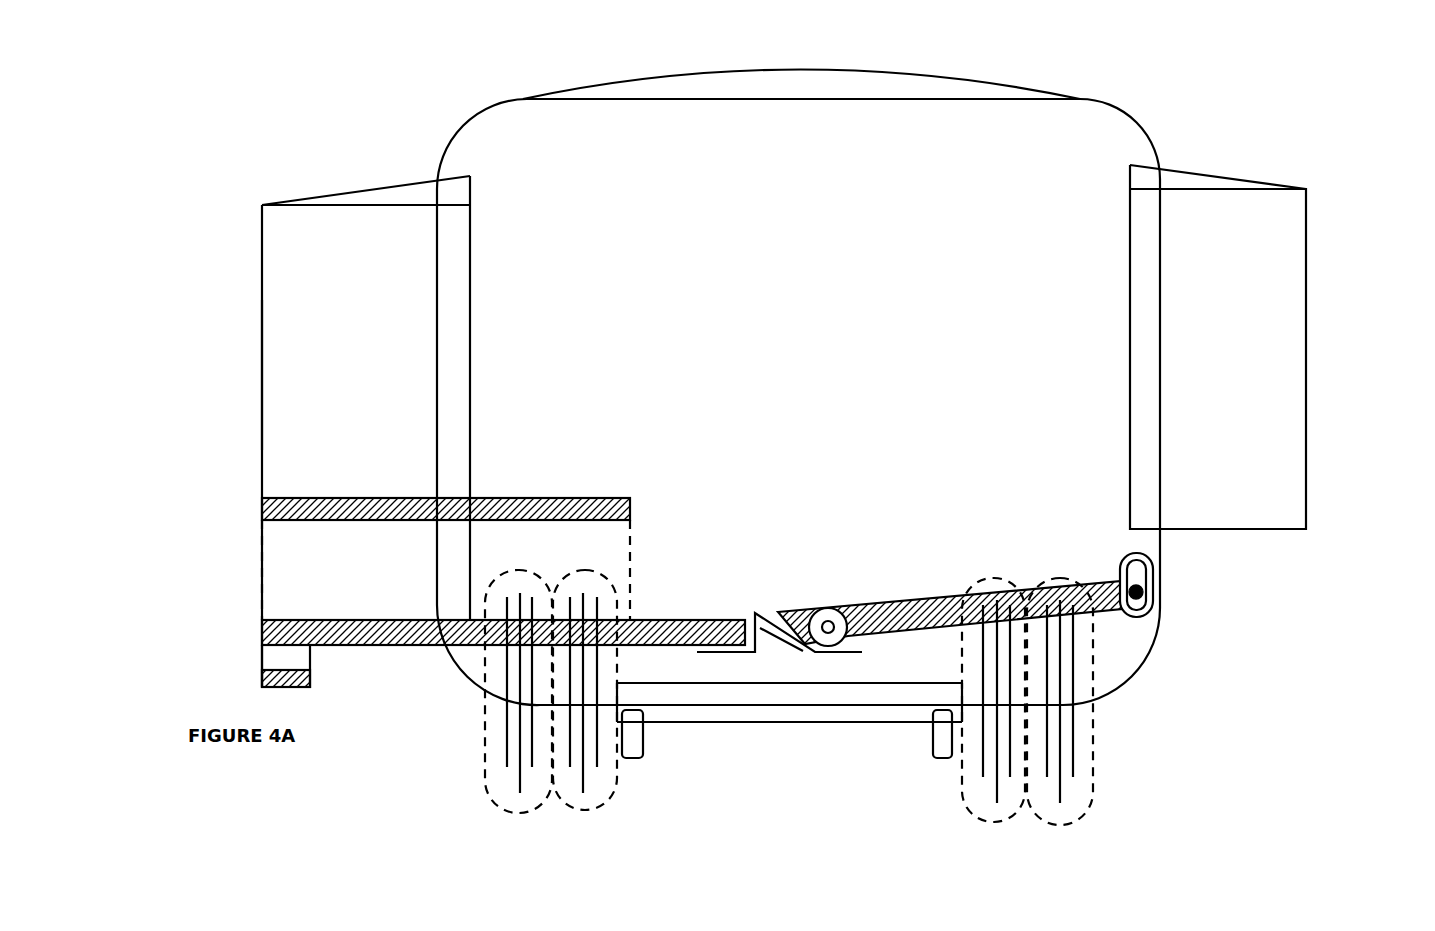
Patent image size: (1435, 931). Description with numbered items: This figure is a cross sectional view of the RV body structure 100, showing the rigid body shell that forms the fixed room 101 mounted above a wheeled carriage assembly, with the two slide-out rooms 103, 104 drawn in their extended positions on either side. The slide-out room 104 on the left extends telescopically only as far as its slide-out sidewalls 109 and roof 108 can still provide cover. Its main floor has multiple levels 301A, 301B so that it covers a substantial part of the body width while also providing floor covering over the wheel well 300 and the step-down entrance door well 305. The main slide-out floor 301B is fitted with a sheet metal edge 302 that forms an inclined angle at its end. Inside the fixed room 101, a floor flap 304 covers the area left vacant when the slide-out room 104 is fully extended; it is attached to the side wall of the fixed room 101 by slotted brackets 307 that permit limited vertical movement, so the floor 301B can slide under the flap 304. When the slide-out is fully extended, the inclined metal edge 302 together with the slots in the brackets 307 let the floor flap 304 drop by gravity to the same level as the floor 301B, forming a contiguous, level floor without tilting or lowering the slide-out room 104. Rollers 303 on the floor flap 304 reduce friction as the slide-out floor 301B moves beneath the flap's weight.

The RV body structure 100 is at (1183, 105).
The fixed room 101 is at (440, 150).
The slide-out room 103 is at (1283, 250).
The slide-out room 104 is at (230, 290).
The roof 108 is at (353, 190).
The slide-out sidewalls 109 is at (290, 377).
The wheel well 300 is at (285, 553).
The slide-out floor level 301A is at (632, 507).
The main slide-out floor 301B is at (680, 623).
The sheet metal edge 302 is at (790, 640).
The rollers 303 is at (848, 645).
The floor flap 304 is at (1058, 570).
The step-down entrance door well 305 is at (262, 668).
The slotted brackets 307 is at (1150, 580).